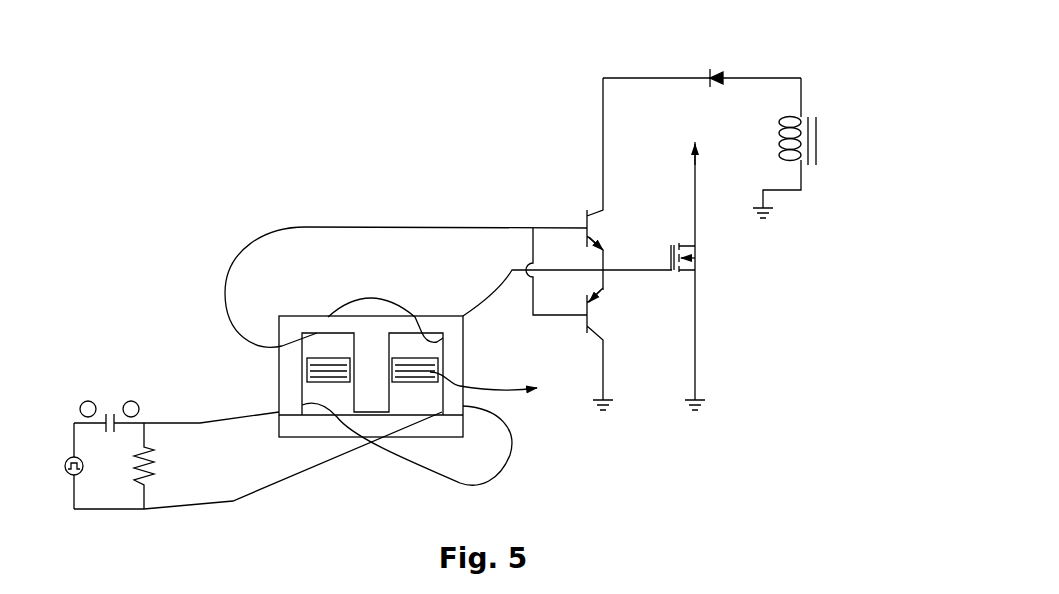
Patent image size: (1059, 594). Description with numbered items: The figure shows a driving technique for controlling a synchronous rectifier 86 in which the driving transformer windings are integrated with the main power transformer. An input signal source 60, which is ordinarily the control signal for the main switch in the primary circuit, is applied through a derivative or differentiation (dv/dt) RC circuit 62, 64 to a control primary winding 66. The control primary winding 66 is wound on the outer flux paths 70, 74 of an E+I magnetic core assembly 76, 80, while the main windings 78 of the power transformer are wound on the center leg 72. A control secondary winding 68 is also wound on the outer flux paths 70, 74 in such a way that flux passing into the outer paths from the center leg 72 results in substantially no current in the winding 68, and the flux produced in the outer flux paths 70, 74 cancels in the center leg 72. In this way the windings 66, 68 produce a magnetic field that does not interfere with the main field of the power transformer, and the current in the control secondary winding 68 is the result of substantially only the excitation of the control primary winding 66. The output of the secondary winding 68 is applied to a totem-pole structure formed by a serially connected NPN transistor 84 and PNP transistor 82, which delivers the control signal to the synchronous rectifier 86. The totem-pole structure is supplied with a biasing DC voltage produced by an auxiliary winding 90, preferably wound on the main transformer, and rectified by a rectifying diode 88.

The input signal source 60 is at (66, 458).
The RC circuit 62 is at (108, 417).
The RC circuit 64 is at (160, 466).
The control primary winding 66 is at (308, 468).
The control secondary winding 68 is at (253, 244).
The outer flux path 70 is at (296, 315).
The center leg 72 is at (375, 315).
The outer flux path 74 is at (457, 315).
The E+I magnetic core assembly 76 is at (468, 372).
The main windings 78 is at (496, 384).
The E+I magnetic core assembly 80 is at (468, 425).
The PNP transistor 82 is at (607, 310).
The NPN transistor 84 is at (586, 206).
The synchronous rectifier 86 is at (710, 243).
The rectifying diode 88 is at (720, 64).
The auxiliary winding 90 is at (814, 101).